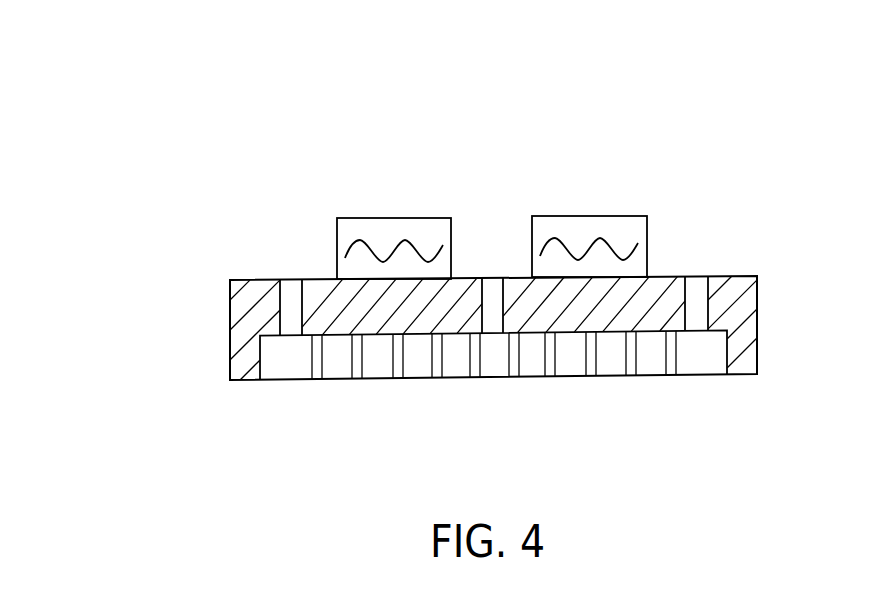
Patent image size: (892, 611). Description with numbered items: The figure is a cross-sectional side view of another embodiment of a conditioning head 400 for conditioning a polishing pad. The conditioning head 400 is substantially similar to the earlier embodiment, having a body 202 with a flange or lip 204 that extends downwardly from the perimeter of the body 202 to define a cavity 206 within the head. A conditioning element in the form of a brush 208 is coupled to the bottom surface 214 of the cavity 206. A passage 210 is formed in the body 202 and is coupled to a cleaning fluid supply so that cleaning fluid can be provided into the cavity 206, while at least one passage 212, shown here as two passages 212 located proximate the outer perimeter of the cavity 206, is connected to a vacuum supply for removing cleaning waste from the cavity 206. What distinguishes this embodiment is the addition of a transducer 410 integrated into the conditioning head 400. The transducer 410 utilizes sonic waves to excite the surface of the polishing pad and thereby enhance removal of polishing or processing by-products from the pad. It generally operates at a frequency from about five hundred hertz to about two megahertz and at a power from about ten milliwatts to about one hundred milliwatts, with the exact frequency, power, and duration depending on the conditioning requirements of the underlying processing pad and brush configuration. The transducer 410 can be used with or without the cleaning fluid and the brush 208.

The conditioning head 400 is at (278, 103).
The body 202 is at (230, 305).
The flange or lip 204 is at (230, 348).
The cavity 206 is at (292, 360).
The brush 208 is at (692, 353).
The passage 210 is at (493, 277).
The passages 212 is at (291, 279).
The bottom surface 214 is at (713, 331).
The transducer 410 is at (397, 218).